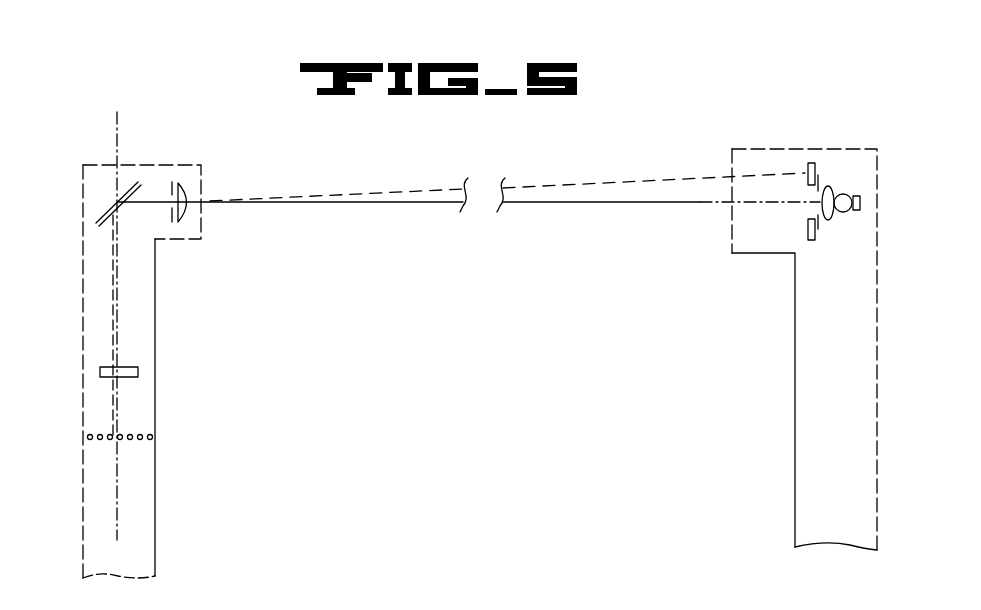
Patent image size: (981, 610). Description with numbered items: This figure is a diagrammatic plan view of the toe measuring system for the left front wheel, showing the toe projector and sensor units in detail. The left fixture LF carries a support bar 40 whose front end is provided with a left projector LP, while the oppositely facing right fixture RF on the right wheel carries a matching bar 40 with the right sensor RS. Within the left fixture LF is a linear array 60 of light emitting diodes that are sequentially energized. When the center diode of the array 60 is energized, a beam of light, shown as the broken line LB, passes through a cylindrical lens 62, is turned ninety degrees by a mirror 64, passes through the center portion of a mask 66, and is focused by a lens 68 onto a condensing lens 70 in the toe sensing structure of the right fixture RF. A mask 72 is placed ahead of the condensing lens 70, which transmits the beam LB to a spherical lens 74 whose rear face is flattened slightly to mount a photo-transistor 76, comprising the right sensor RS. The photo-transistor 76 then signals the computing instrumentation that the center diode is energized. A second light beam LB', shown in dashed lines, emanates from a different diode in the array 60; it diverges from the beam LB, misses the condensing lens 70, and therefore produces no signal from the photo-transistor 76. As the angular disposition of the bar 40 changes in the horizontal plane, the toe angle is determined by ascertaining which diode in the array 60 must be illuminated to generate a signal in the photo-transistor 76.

The cross bar 40 is at (156, 492).
The linear array of light emitting diodes 60 is at (157, 437).
The cylindrical lens 62 is at (138, 372).
The mirror 64 is at (117, 203).
The mask 66 is at (172, 186).
The lens 68 is at (189, 198).
The condensing lens 70 is at (831, 190).
The mask 72 is at (818, 221).
The spherical lens 74 is at (844, 194).
The photo-transistor 76 is at (856, 198).
The left beam LB is at (466, 319).
The light beam LB' is at (507, 171).
The left projector LP is at (157, 318).
The left fixture LF is at (182, 421).
The right sensor RS is at (860, 209).
The right fixture RF is at (793, 317).